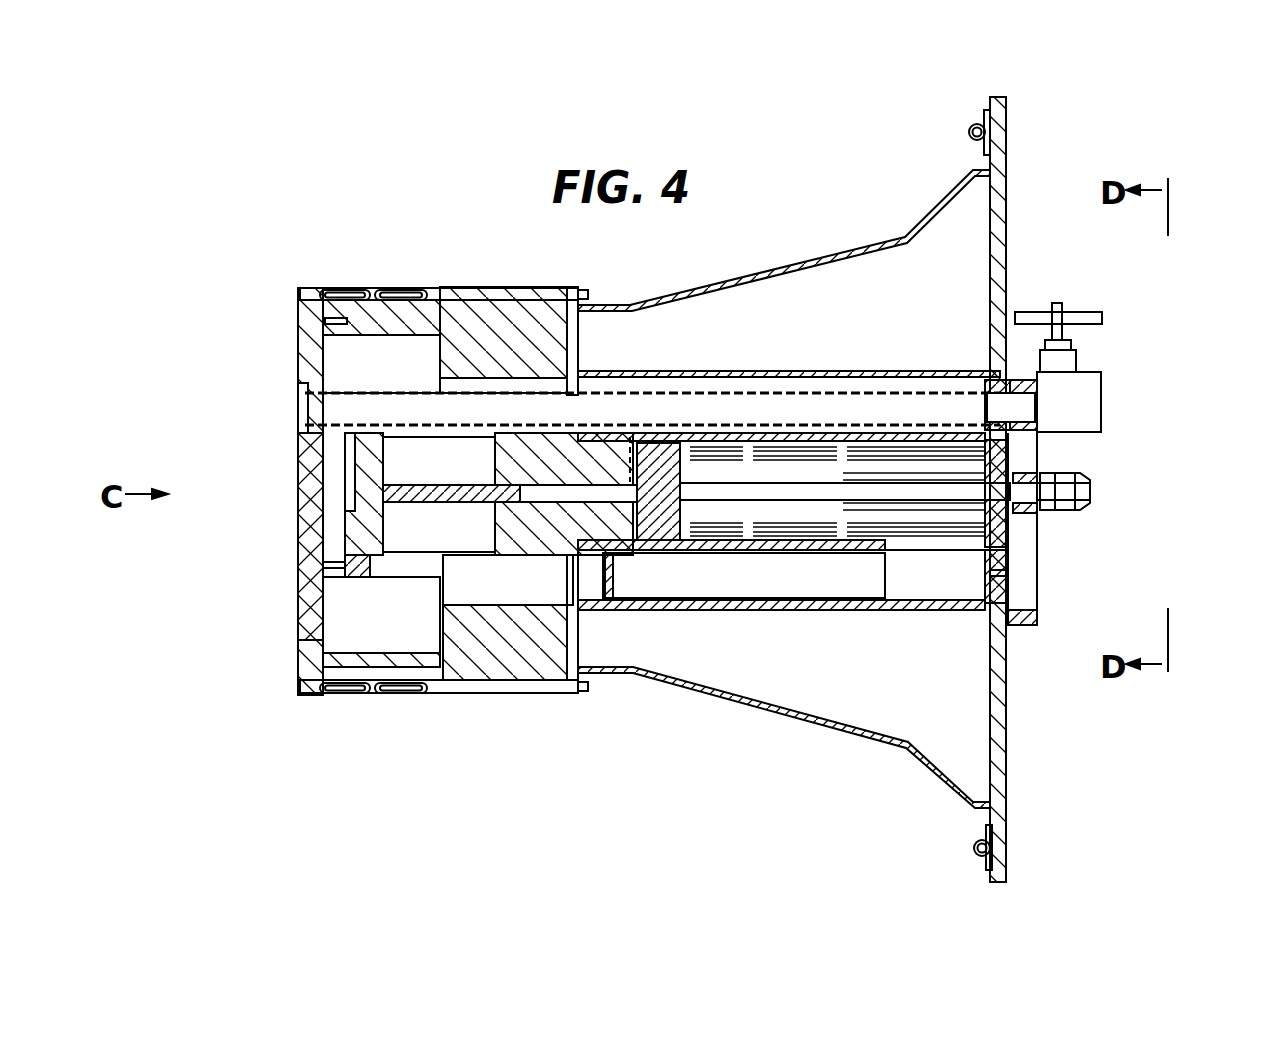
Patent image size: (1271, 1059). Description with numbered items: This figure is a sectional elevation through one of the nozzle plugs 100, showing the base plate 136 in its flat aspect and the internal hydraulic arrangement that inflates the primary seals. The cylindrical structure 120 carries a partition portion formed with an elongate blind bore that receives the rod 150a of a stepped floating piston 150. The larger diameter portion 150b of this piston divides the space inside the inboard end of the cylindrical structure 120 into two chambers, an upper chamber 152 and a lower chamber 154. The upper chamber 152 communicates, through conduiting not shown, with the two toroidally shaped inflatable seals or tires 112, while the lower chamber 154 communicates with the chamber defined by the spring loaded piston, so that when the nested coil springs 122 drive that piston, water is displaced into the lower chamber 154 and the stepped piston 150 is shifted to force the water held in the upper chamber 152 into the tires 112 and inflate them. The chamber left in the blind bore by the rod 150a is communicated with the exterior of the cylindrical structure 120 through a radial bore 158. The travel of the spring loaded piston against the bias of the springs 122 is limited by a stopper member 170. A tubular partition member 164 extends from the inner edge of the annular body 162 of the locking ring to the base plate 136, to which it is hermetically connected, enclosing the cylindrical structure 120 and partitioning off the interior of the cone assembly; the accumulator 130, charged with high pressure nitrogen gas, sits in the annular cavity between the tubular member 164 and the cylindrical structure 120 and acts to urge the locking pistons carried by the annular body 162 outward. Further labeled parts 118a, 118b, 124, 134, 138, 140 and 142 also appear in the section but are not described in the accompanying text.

The plug 100 is at (1165, 548).
The tires 112 is at (366, 280).
The piston rod 118a is at (727, 483).
The rod end fitting 118b is at (1099, 485).
The cylindrical structure 120 is at (823, 433).
The springs 122 is at (916, 527).
The bearing block 124 is at (430, 357).
The accumulator 130 is at (850, 603).
The lower support plate 134 is at (788, 712).
The base plate 136 is at (1005, 213).
The eyelet 138 is at (960, 112).
The shaft tube 140 is at (764, 380).
The valve 142 is at (1108, 310).
The stepped floating piston 150 is at (365, 512).
The rod 150a is at (437, 503).
The larger diameter portion 150b is at (345, 572).
The upper chamber 152 is at (303, 470).
The lower chamber 154 is at (333, 468).
The radial bore 158 is at (631, 440).
The annular body 162 is at (518, 660).
The tubular partition member 164 is at (935, 612).
The stopper member 170 is at (920, 455).